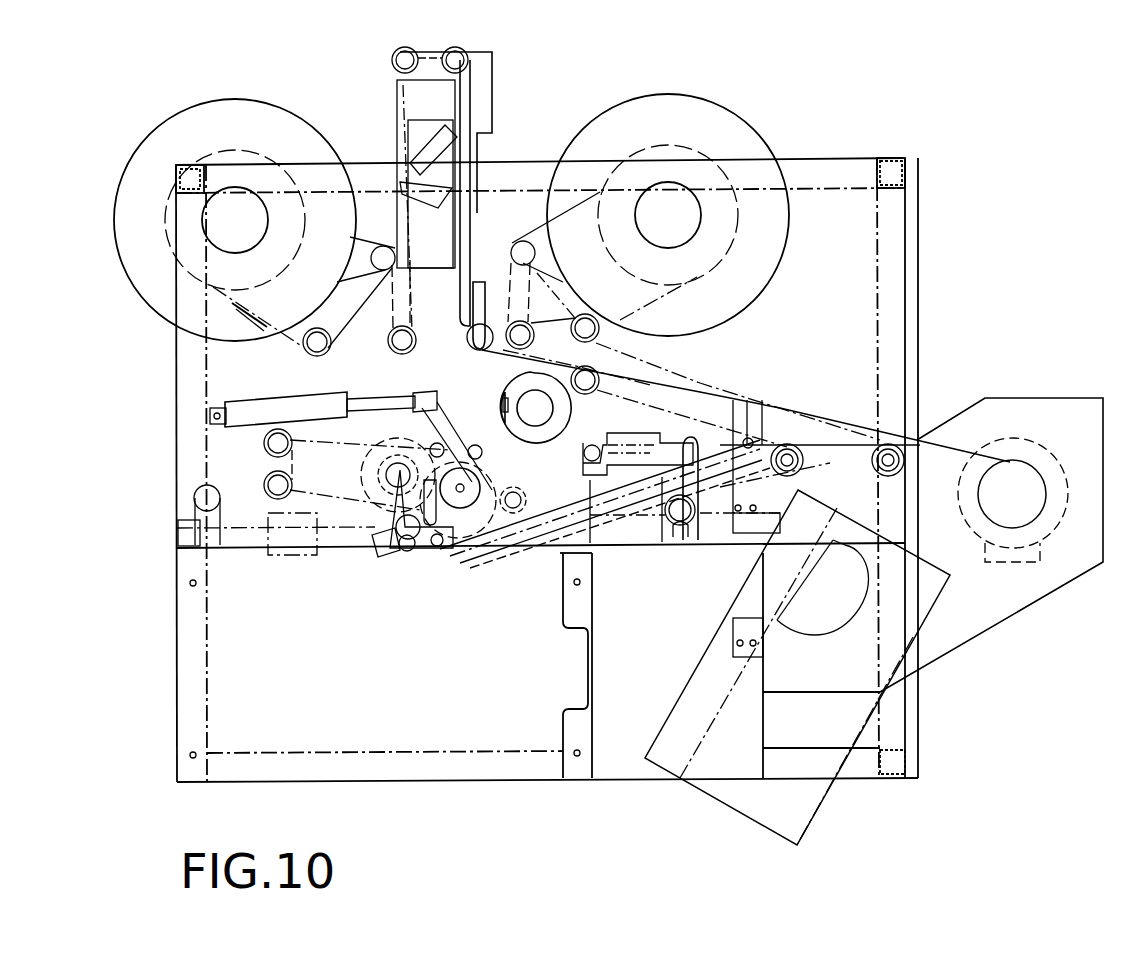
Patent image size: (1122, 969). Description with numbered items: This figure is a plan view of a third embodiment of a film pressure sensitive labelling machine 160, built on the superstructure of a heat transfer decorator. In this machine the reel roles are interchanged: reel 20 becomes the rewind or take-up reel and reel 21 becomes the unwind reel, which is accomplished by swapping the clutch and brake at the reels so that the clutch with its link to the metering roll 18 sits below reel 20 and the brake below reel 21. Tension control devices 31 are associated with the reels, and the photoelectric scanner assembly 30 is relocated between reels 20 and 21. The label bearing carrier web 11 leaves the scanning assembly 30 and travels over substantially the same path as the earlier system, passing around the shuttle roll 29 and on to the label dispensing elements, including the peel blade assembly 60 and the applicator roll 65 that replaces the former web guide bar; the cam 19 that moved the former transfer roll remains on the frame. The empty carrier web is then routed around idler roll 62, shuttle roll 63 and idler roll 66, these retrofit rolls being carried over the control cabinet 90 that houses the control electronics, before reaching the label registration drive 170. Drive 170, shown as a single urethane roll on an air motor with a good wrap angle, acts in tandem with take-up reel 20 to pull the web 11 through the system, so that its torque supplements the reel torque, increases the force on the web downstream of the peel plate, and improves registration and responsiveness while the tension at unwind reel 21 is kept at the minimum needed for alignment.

The labelling machine 160 is at (588, 839).
The unwind reel 21 is at (257, 108).
The rewind reel 20 is at (710, 120).
The photoelectric scanner assembly 30 is at (497, 88).
The tension control devices 31 is at (404, 261).
The cam 19 is at (604, 338).
The label bearing carrier web 11 is at (703, 384).
The metering roll 18 is at (562, 409).
The shuttle roll 29 is at (600, 440).
The shuttle roll 63 is at (680, 455).
The idler roll 62 is at (787, 445).
The idler roll 66 is at (890, 448).
The label registration drive 170 is at (1033, 477).
The control cabinet 90 is at (833, 783).
The peel blade assembly 60 is at (418, 552).
The applicator roll 65 is at (383, 555).